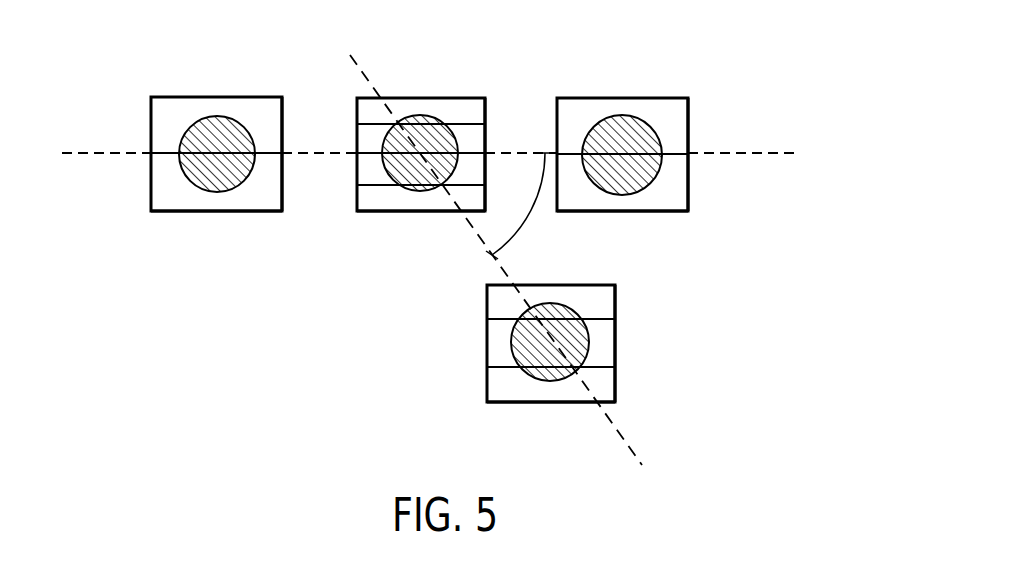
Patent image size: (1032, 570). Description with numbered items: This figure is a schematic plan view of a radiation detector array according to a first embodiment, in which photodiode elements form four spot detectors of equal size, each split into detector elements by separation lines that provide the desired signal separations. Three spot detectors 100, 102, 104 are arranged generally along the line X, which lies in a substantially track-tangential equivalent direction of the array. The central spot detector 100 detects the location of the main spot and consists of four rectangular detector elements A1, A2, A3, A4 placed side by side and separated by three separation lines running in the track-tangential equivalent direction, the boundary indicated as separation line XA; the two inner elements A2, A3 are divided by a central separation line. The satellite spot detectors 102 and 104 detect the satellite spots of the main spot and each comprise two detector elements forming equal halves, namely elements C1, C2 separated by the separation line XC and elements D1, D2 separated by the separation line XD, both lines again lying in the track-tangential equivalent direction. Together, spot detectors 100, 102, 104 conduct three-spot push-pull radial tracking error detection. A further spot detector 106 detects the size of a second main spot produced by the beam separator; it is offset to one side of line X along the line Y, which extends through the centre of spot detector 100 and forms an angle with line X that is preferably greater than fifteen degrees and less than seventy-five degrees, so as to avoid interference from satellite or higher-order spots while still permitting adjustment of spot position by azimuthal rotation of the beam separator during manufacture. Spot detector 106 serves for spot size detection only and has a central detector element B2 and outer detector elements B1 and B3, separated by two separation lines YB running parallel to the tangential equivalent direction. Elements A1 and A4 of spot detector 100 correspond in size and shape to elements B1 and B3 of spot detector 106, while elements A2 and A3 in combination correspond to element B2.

The central spot detector 100 is at (445, 98).
The satellite spot detector 102 is at (236, 97).
The satellite spot detector 104 is at (637, 98).
The further spot detector 106 is at (615, 388).
The detector element A1 is at (404, 113).
The detector element A2 is at (404, 142).
The detector element A3 is at (404, 173).
The detector element A4 is at (404, 200).
The outer detector element B1 is at (533, 307).
The central detector element B2 is at (533, 351).
The outer detector element B3 is at (533, 390).
The detector element C1 is at (199, 138).
The detector element C2 is at (199, 190).
The detector element D1 is at (639, 139).
The detector element D2 is at (639, 192).
The separation line XA is at (470, 152).
The separation line XC is at (270, 157).
The separation line XD is at (673, 154).
The separation line YB is at (606, 321).
The line X- X is at (429, 153).
The line Y- Y is at (494, 257).